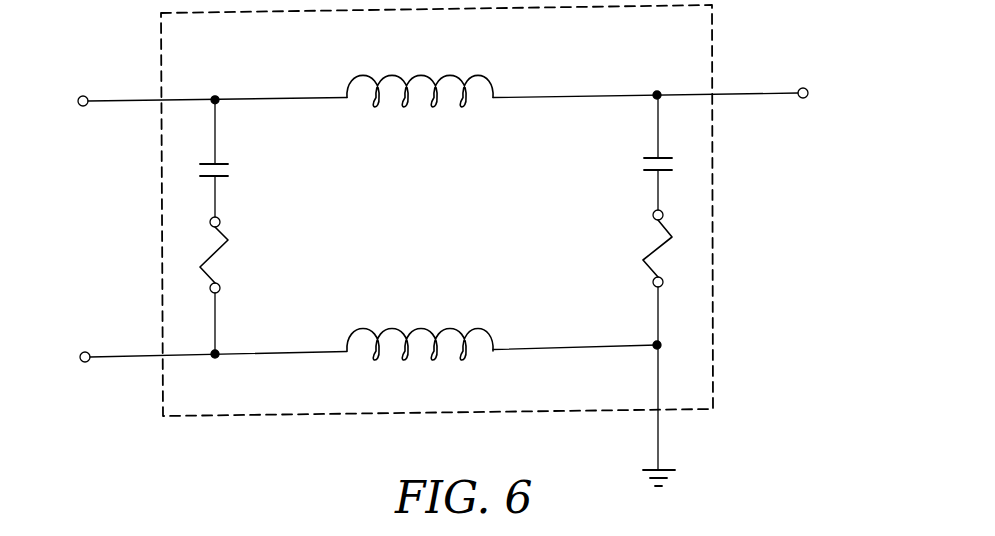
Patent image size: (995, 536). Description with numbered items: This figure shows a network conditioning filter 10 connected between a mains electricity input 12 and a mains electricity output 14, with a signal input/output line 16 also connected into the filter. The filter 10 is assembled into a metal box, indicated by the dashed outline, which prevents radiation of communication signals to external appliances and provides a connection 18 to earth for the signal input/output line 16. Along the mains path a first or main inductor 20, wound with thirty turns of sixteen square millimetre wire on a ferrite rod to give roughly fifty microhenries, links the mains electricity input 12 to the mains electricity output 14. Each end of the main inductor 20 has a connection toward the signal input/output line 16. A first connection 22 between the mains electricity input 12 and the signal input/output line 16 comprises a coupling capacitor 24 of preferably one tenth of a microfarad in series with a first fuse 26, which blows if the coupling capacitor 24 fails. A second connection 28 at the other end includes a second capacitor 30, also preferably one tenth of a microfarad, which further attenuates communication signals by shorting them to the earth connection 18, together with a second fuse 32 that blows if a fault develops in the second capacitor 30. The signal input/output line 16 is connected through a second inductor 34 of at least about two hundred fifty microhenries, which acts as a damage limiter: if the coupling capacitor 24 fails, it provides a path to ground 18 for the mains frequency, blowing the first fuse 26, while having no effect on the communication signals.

The filter 10 is at (206, 446).
The mains electricity input 12 is at (77, 101).
The mains electricity output 14 is at (810, 93).
The signal input/output line 16 is at (79, 357).
The connection to earth 18 is at (667, 468).
The main inductor 20 is at (418, 80).
The first connection 22 is at (217, 197).
The coupling capacitor 24 is at (230, 170).
The first fuse 26 is at (230, 240).
The second connection 28 is at (655, 194).
The second capacitor 30 is at (640, 162).
The second fuse 32 is at (643, 258).
The second inductor 34 is at (420, 332).